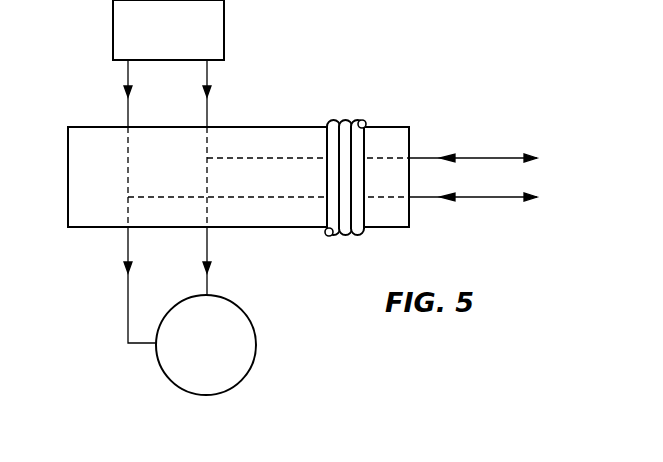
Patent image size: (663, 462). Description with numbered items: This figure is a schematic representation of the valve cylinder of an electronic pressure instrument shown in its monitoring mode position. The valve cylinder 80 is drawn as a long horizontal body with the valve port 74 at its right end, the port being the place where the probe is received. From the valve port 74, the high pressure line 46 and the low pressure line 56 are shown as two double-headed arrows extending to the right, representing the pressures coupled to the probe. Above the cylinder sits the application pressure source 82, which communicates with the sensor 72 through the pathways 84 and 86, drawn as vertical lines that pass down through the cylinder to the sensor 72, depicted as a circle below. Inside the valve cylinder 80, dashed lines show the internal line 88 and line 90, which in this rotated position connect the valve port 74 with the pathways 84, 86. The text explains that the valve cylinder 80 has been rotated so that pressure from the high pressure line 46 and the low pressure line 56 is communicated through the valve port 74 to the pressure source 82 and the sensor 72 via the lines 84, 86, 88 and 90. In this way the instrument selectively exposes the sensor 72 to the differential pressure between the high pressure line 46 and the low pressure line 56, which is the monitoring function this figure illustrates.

The valve cylinder 80 is at (272, 66).
The application pressure source 82 is at (113, 28).
The pathway 84 is at (128, 178).
The pathway 86 is at (207, 178).
The line 88 is at (283, 157).
The line 90 is at (260, 198).
The valve port 74 is at (411, 137).
The high pressure line 46 is at (500, 157).
The low pressure line 56 is at (498, 199).
The sensor 72 is at (255, 347).